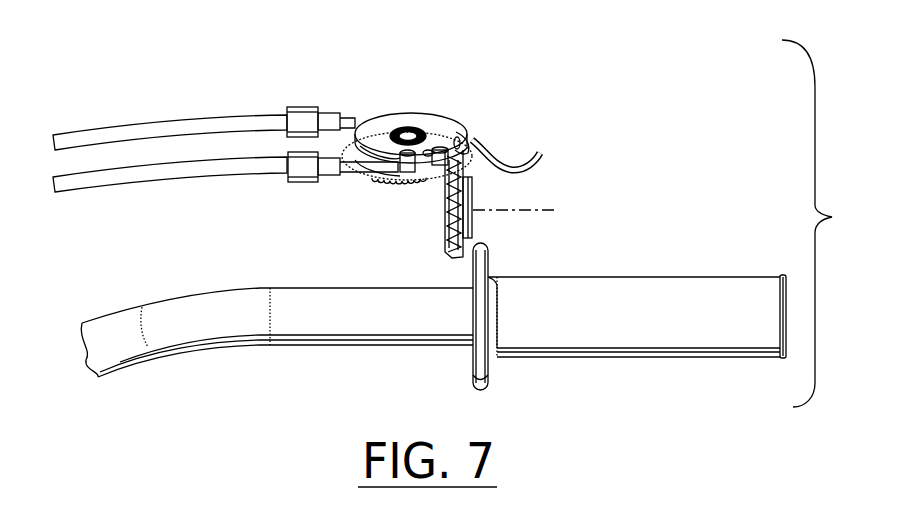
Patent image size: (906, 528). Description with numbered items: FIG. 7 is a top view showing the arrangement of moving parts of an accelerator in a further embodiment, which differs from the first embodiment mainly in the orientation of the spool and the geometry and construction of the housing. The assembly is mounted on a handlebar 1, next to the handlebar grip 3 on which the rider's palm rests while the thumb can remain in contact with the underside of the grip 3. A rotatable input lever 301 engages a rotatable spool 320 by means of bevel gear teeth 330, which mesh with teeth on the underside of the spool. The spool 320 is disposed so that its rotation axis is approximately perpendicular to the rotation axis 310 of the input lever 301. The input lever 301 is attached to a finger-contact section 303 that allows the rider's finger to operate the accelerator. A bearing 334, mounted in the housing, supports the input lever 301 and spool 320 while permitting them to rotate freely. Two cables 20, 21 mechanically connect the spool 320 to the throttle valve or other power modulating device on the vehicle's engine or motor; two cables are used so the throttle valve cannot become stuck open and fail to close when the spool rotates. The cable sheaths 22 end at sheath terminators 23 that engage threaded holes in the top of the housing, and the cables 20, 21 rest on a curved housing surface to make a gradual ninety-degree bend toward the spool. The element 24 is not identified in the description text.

The handlebar 1 is at (203, 302).
The handlebar grip 3 is at (663, 298).
The cable 20 is at (370, 173).
The cable 21 is at (465, 137).
The cable sheath 22 is at (148, 128).
The sheath terminator 23 is at (302, 120).
The pins 24 is at (413, 177).
The input lever 301 is at (465, 230).
The finger-contact section 303 is at (540, 163).
The rotation axis 310 is at (532, 205).
The spool 320 is at (412, 118).
The bevel gear teeth 330 is at (447, 240).
The bearing 334 is at (398, 127).